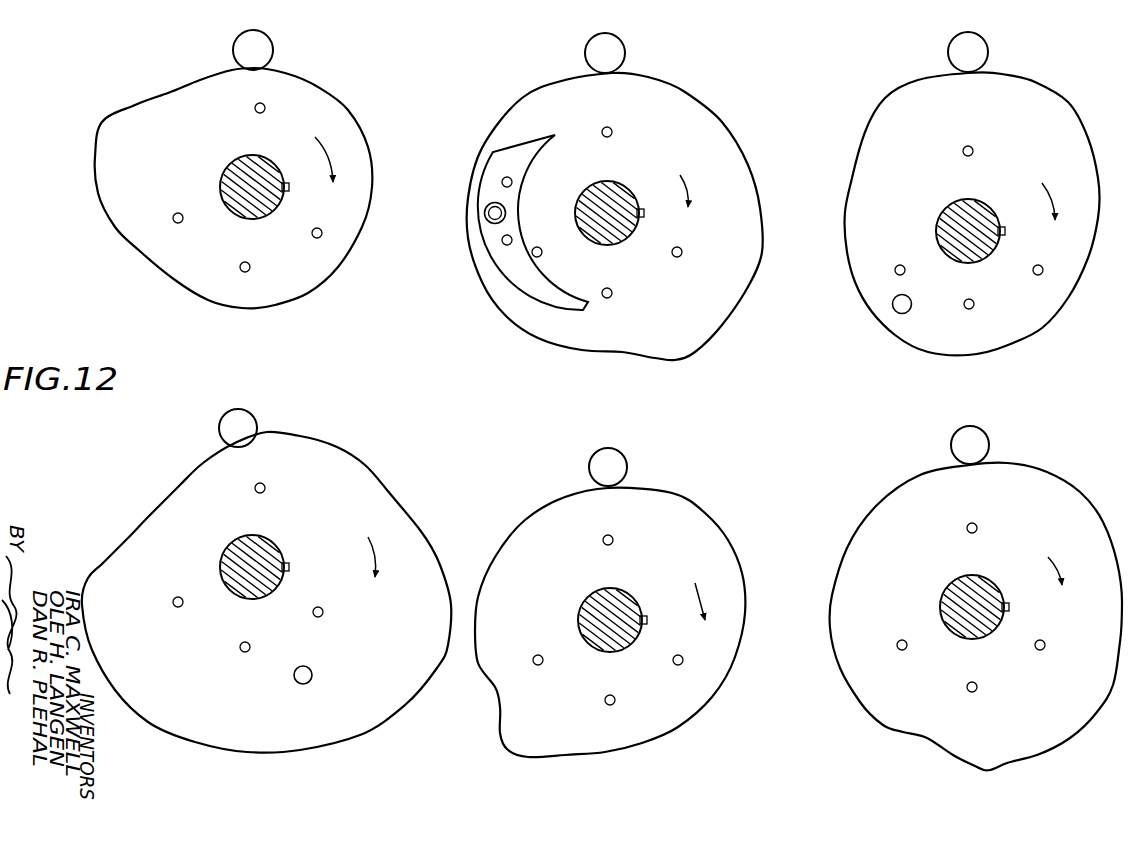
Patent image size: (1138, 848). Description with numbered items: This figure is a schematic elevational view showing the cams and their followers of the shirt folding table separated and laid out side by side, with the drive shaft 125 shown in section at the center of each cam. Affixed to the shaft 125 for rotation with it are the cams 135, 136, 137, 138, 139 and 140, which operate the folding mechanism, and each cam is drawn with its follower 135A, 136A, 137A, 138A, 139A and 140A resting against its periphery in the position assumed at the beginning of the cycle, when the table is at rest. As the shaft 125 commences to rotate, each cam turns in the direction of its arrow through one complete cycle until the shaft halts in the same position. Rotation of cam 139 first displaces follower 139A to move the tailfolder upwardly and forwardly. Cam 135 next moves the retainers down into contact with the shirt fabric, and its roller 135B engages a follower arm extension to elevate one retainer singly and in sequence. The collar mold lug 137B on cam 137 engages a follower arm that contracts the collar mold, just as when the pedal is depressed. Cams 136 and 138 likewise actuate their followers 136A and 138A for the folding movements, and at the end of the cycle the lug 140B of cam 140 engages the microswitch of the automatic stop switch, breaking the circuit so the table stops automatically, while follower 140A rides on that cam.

The cam shaft 125 is at (280, 132).
The cam 135 is at (990, 123).
The cam follower 135A is at (985, 48).
The roller 135B is at (905, 300).
The cam 136 is at (990, 511).
The cam follower 136A is at (980, 443).
The cam 137 is at (633, 116).
The cam follower 137A is at (617, 50).
The collar mold lug 137B is at (525, 282).
The cam 138 is at (580, 548).
The cam follower 138A is at (612, 463).
The cam 139 is at (217, 123).
The cam follower 139A is at (265, 45).
The cam 140 is at (240, 521).
The cam follower 140A is at (245, 420).
The lug 140B is at (312, 668).